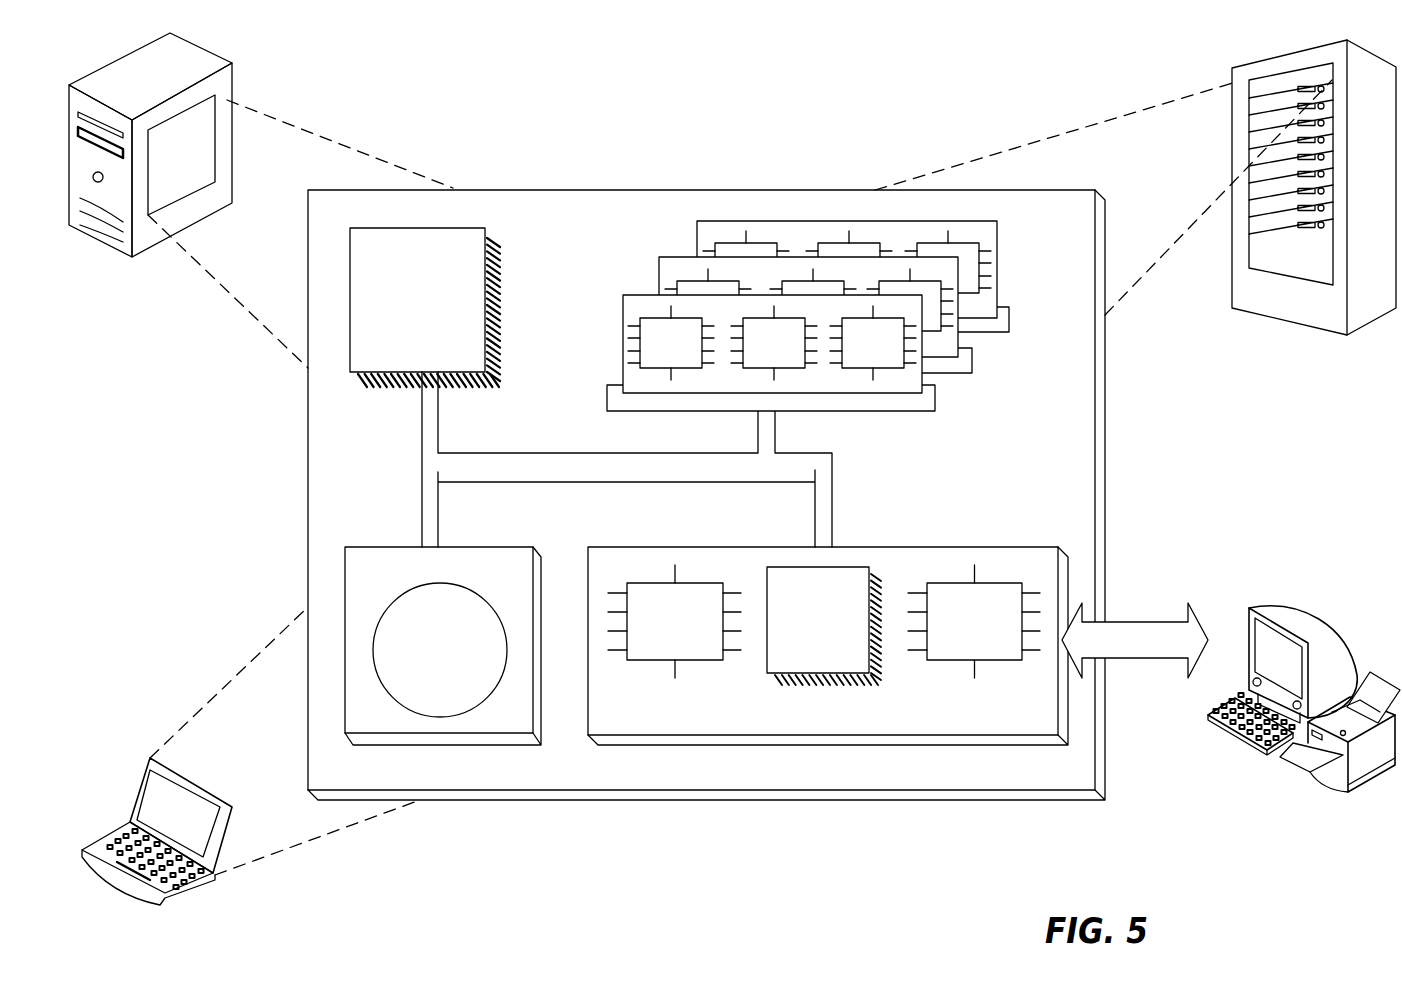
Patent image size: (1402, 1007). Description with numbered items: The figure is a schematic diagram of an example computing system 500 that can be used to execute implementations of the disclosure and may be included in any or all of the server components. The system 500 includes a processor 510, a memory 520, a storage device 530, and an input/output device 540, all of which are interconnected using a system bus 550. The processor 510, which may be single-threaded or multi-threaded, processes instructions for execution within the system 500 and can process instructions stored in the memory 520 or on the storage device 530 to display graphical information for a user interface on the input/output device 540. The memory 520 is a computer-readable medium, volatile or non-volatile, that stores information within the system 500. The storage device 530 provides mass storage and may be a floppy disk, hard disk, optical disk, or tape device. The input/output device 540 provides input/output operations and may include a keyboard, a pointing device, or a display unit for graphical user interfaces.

The computing system 500 is at (520, 108).
The processor 510 is at (474, 364).
The memory 520 is at (1003, 370).
The storage device 530 is at (522, 724).
The input/output device 540 is at (1247, 616).
The system bus 550 is at (622, 470).